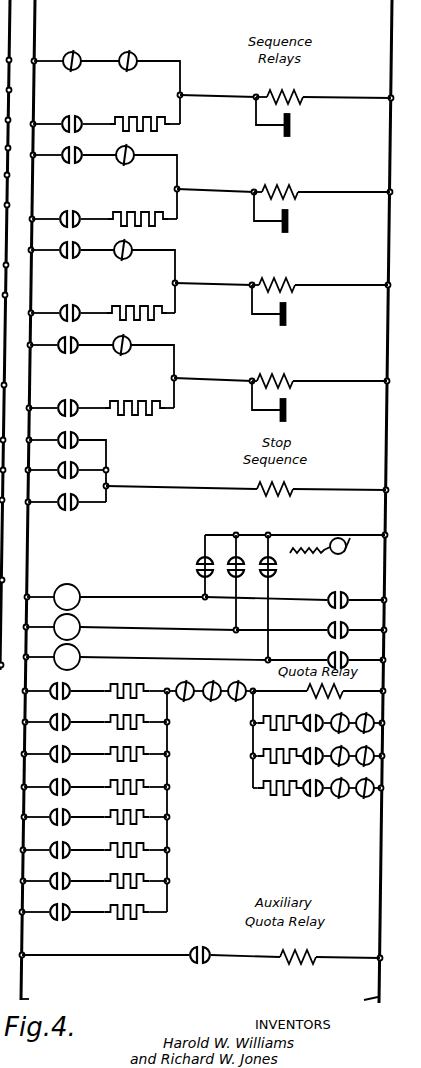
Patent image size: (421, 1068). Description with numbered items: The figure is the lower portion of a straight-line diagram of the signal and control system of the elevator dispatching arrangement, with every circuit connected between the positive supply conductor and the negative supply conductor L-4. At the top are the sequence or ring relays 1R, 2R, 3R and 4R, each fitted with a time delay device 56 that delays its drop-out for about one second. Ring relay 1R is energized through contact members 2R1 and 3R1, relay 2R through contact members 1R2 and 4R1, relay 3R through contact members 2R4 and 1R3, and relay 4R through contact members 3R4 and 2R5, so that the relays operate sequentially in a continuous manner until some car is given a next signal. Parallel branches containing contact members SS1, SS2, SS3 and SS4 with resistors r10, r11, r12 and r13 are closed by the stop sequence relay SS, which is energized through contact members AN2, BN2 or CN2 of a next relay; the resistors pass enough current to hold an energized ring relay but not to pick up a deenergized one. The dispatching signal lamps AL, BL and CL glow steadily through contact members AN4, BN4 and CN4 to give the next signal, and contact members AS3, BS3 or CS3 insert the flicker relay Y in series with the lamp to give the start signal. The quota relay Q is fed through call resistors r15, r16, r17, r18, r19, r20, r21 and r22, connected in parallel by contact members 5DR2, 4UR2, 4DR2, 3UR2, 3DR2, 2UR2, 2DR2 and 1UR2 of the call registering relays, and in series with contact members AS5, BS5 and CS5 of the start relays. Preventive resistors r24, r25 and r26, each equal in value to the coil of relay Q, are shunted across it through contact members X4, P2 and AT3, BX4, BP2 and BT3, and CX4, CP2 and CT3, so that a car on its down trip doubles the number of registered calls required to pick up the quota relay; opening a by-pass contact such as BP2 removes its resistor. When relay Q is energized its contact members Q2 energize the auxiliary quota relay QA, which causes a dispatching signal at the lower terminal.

The contact members of ring relay 2R 2R1 is at (69, 56).
The contact members of ring relay 3R 3R1 is at (125, 56).
The contact members of stop sequence relay SS1 is at (67, 116).
The resistor r10 is at (140, 115).
The contact members of ring relay 1R 1R2 is at (68, 149).
The contact members of ring relay 4R 4R1 is at (134, 150).
The contact members of stop sequence relay SS2 is at (66, 211).
The resistor r11 is at (138, 210).
The contact members of ring relay 2R 2R4 is at (80, 244).
The contact members of ring relay 1R 1R3 is at (135, 246).
The contact members of stop sequence relay SS3 is at (66, 305).
The resistor r12 is at (137, 305).
The contact members of ring relay 3R 3R4 is at (79, 339).
The contact members of ring relay 2R 2R5 is at (136, 341).
The contact members of stop sequence relay SS4 is at (63, 401).
The resistor r13 is at (135, 400).
The contact members of next relay AN AN2 is at (83, 435).
The contact members of next relay BN BN2 is at (79, 465).
The contact members of next relay CN CN2 is at (70, 496).
The sequence or ring relay 1R is at (323, 90).
The time delay device 56 is at (290, 125).
The sequence or ring relay 2R is at (321, 201).
The sequence or ring relay 3R is at (319, 293).
The sequence or ring relay 4R is at (319, 389).
The stop sequence relay SS is at (246, 482).
The flicker relay Y is at (338, 538).
The contact members of start relay AS AS3 is at (196, 567).
The contact members of start relay BS BS3 is at (227, 582).
The contact members of start relay CS CS3 is at (259, 597).
The dispatching signal lamp AL is at (67, 597).
The dispatching signal lamp BL is at (67, 627).
The dispatching signal lamp CL is at (67, 657).
The contact members of next relay AN AN4 is at (341, 594).
The contact members of next relay BN BN4 is at (348, 624).
The contact members of next relay CN CN4 is at (346, 654).
The contact members of down call registering relay 5DR 5DR2 is at (76, 685).
The call resistor r15 is at (127, 684).
The contact members of start relay AS AS5 is at (179, 684).
The contact members of start relay BS BS5 is at (212, 684).
The contact members of start relay CS CS5 is at (241, 684).
The quota relay Q is at (318, 688).
The contact members of up call registering relay 4UR 4UR2 is at (74, 716).
The call resistor r16 is at (127, 715).
The contact members of down call registering relay 4DR 4DR2 is at (74, 748).
The call resistor r17 is at (127, 747).
The contact members of up call registering relay 3UR 3UR2 is at (74, 780).
The call resistor r18 is at (127, 780).
The contact members of down call registering relay 3DR 3DR2 is at (74, 810).
The call resistor r19 is at (127, 810).
The contact members of up call registering relay 2UR 2UR2 is at (75, 843).
The call resistor r20 is at (127, 842).
The contact members of down call registering relay 2DR 2DR2 is at (71, 874).
The call resistor r21 is at (127, 873).
The contact members of up call registering relay 1UR 1UR2 is at (72, 905).
The call resistor r22 is at (127, 905).
The preventive resistor r24 is at (280, 716).
The contact members of down direction relay X X4 is at (313, 717).
The contact members of by-pass relay P P2 is at (340, 717).
The contact members of terminal relay AT AT3 is at (365, 720).
The preventive resistor r25 is at (280, 749).
The contact members of down direction relay BX BX4 is at (310, 750).
The contact members of by-pass relay BP BP2 is at (337, 752).
The contact members of terminal relay BT BT3 is at (363, 752).
The preventive resistor r26 is at (280, 781).
The contact members of down direction relay CX CX4 is at (309, 782).
The contact members of by-pass relay CP CP2 is at (337, 784).
The contact members of terminal relay CT CT3 is at (363, 784).
The contact members of quota relay Q2 is at (198, 948).
The auxiliary quota relay QA is at (295, 948).
The supply conductor L-4 is at (354, 1001).